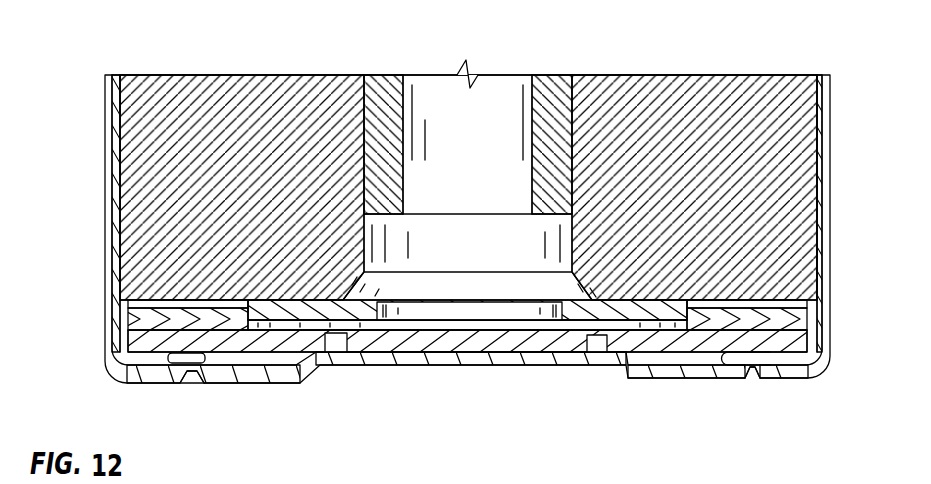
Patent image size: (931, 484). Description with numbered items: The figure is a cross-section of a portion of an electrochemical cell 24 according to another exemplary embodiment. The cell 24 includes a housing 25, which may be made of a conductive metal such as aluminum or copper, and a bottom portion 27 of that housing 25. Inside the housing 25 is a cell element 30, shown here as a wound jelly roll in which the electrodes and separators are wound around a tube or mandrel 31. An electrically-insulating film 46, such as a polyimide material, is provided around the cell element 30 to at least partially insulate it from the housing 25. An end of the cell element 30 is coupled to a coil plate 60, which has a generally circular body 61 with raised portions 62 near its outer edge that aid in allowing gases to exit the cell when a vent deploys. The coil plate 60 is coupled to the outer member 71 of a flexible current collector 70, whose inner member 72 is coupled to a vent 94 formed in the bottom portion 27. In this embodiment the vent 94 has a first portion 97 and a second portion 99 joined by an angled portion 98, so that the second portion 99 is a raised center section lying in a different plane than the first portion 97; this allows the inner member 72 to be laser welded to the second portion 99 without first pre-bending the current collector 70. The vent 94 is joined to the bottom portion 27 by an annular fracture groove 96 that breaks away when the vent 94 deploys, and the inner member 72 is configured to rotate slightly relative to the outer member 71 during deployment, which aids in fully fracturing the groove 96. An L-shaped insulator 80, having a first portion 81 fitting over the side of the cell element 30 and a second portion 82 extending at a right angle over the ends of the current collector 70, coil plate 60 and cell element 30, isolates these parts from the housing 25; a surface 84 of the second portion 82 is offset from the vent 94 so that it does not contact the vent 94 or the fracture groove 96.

The cell 24 is at (105, 48).
The housing 25 is at (112, 217).
The electrically-insulating film 46 is at (113, 143).
The cell element 30 is at (263, 100).
The mandrel 31 is at (555, 90).
The coil plate 60 is at (757, 317).
The raised portions 62 is at (778, 320).
The first portion 81 is at (128, 332).
The body 61 is at (653, 312).
The inner member 72 is at (425, 342).
The current collector 70 is at (296, 340).
The angled portion 98 is at (625, 370).
The second portion 99 is at (527, 358).
The vent 94 is at (448, 365).
The insulator 80 is at (140, 365).
The second portion 82 is at (161, 378).
The surface 84 is at (224, 360).
The annular fracture groove 96 is at (750, 380).
The outer member 71 is at (700, 366).
The first portion 97 is at (661, 380).
The bottom portion 27 is at (790, 372).